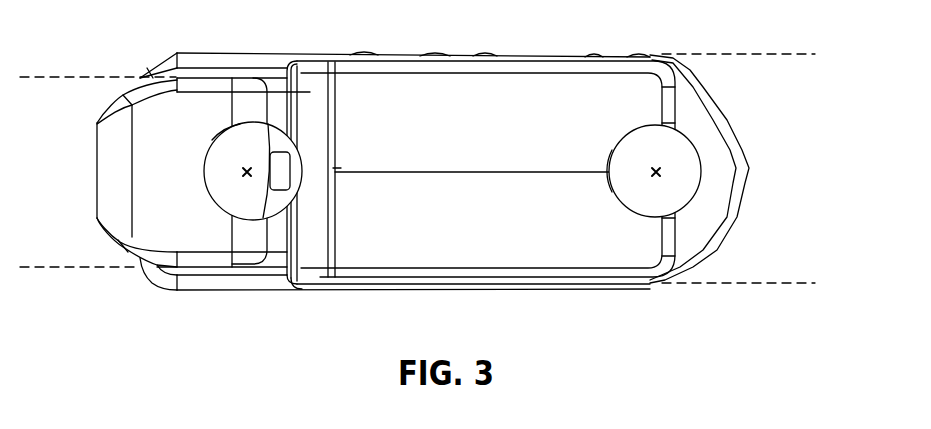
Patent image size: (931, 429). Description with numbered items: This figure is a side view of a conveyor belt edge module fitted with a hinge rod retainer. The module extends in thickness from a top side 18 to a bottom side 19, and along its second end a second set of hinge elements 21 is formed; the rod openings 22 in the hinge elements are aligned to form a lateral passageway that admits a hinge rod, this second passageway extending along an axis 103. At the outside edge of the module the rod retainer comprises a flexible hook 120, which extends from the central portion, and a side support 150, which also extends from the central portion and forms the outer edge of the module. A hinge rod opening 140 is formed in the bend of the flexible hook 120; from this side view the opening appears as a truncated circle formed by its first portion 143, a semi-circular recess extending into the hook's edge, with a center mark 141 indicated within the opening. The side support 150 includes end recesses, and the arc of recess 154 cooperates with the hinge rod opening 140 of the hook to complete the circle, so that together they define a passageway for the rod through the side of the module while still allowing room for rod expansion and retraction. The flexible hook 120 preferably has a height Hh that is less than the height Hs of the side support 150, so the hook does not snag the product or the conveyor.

The flexible hook 120 is at (130, 93).
The hinge rod opening 140 is at (236, 147).
The front wheel center 141 is at (249, 167).
The first portion of the hinge rod opening 143 is at (207, 152).
The rod openings 22 is at (219, 177).
The end recess 154 is at (300, 157).
The side support 150 is at (431, 138).
The top side 18 is at (410, 47).
The bottom side 19 is at (299, 292).
The second set of hinge elements 21 is at (718, 108).
The axis 103 is at (661, 169).
The height of the flexible hook Hh is at (37, 80).
The height of the side support Hs is at (808, 57).